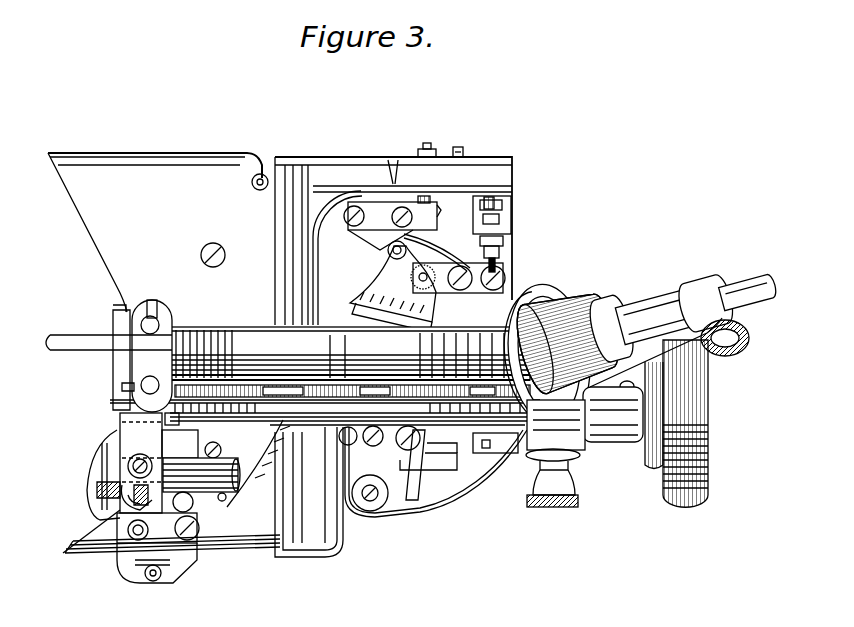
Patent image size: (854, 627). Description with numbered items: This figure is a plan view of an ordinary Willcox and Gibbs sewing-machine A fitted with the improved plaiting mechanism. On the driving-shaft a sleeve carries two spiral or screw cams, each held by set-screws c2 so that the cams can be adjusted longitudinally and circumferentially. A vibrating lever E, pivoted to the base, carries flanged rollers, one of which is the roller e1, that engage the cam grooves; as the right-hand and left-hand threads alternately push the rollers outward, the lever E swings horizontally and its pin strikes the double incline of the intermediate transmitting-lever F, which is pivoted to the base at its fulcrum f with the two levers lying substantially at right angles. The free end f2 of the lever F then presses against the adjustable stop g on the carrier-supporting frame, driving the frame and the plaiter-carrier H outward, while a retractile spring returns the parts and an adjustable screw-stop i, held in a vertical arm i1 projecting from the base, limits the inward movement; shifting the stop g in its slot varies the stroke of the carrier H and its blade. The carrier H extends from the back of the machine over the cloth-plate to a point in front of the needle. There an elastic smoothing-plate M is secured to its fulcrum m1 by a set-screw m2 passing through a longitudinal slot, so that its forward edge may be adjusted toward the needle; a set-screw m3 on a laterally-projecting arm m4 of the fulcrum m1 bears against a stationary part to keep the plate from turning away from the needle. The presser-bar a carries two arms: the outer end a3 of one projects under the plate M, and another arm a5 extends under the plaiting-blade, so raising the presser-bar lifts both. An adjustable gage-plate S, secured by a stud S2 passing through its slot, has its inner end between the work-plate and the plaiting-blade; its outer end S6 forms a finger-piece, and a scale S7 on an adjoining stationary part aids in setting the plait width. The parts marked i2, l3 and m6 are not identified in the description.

The plaiter-carrier H is at (369, 348).
The stop or bearing-piece g is at (444, 207).
The intermediate transmitting-lever F is at (390, 226).
The free end of intermediate lever f2 is at (438, 223).
The fulcrum of intermediate lever f is at (391, 247).
The vibrating lever E is at (393, 289).
The adjustable screw-stop i is at (505, 222).
The vertical arm i1 is at (505, 234).
The contact screw i2 is at (502, 259).
The presser-bar a is at (109, 356).
The sewing-machine A is at (340, 425).
The set-screws c2 is at (325, 390).
The outer end of presser-bar arm a3 is at (178, 420).
The lateral projection or arm of presser-bar a5 is at (180, 444).
The screw l3 is at (201, 463).
The plate M is at (141, 463).
The set-screw m2 is at (140, 478).
The fulcrum m1 is at (112, 472).
The pawl m6 is at (105, 490).
The set-screw m3 is at (183, 502).
The laterally-projecting arm m4 is at (213, 501).
The flanged roller e1 is at (433, 471).
The stud S2 is at (91, 531).
The gage-plate S is at (104, 556).
The scale S7 is at (150, 548).
The outer end of gage-plate S6 is at (145, 573).